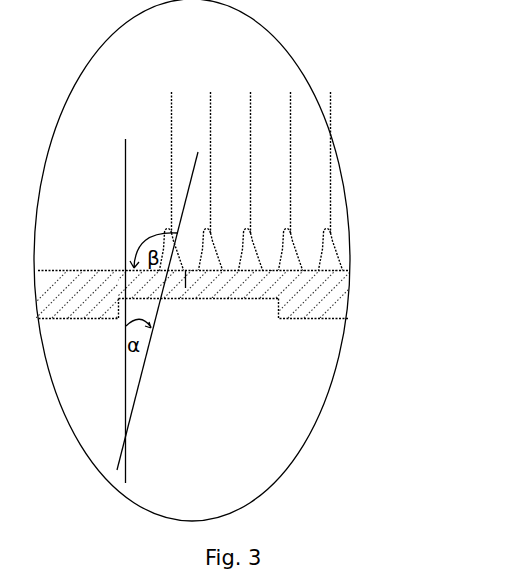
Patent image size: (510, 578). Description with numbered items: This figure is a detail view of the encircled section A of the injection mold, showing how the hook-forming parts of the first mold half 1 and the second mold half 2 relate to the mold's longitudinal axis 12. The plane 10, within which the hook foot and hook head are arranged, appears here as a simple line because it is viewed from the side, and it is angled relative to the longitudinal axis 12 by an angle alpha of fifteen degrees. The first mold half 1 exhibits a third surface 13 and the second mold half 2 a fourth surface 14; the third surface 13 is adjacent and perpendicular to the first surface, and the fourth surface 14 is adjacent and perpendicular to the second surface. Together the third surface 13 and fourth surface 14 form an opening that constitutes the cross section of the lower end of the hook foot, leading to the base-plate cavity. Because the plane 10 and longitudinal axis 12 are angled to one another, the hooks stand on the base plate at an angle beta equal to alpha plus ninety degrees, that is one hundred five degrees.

The first mold half 1 is at (227, 107).
The second mold half 2 is at (190, 105).
The plane 10 is at (192, 178).
The longitudinal axis 12 is at (124, 171).
The third surface 13 is at (234, 268).
The fourth surface 14 is at (186, 288).
The encircled section A is at (327, 392).